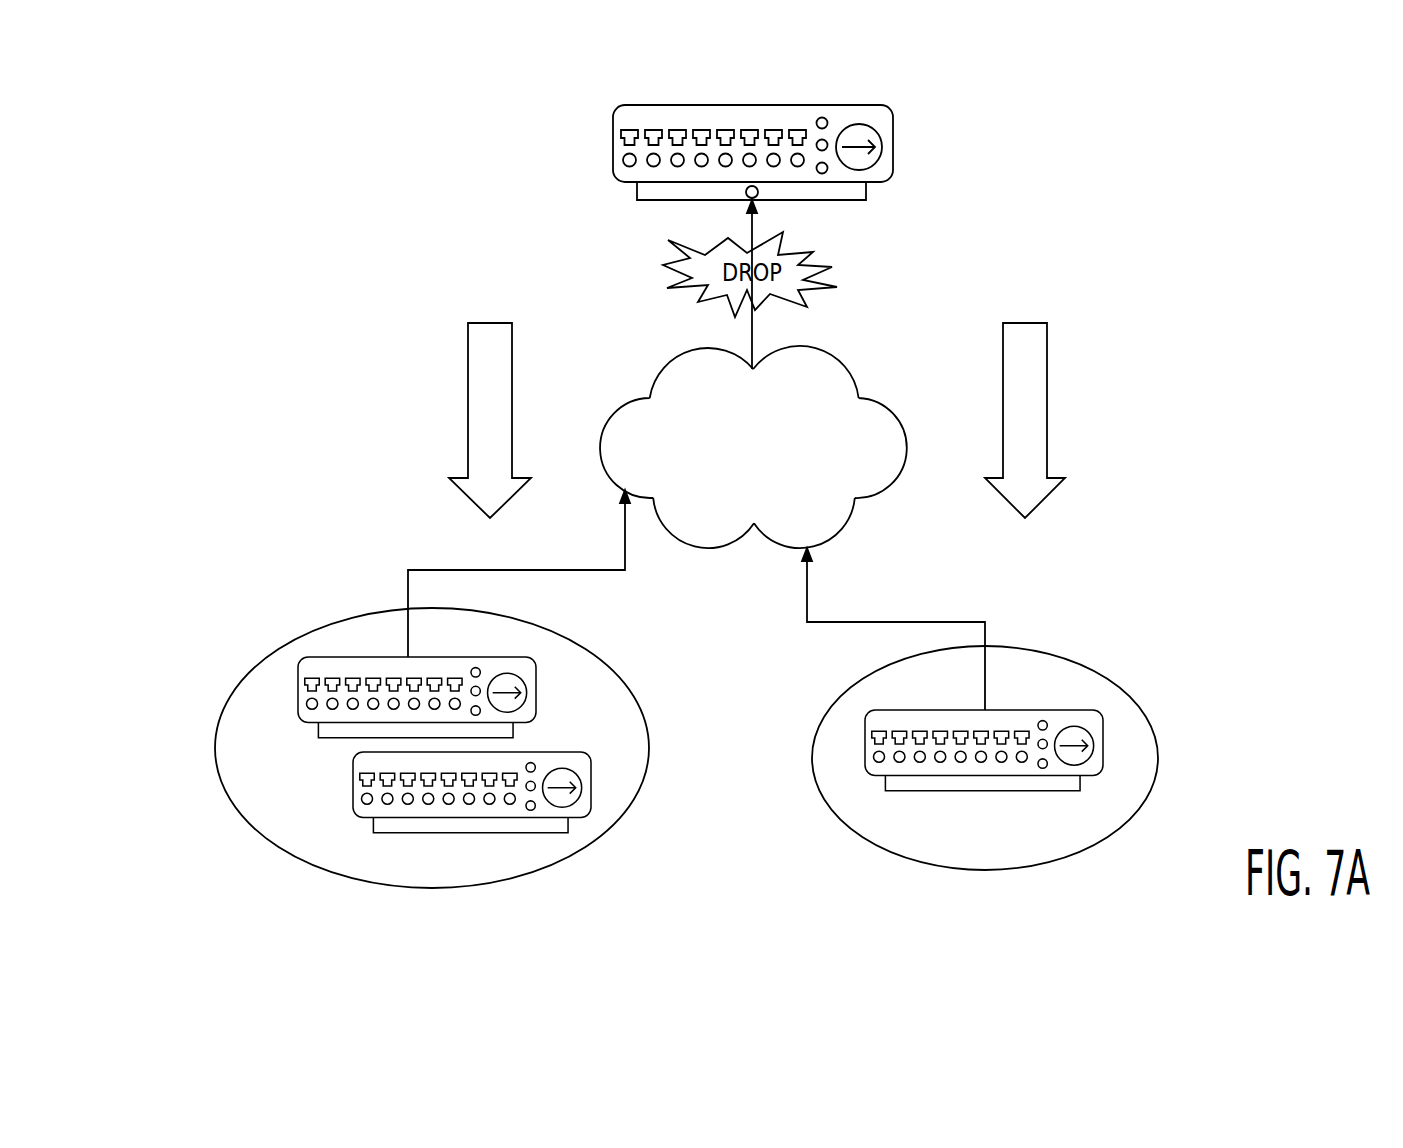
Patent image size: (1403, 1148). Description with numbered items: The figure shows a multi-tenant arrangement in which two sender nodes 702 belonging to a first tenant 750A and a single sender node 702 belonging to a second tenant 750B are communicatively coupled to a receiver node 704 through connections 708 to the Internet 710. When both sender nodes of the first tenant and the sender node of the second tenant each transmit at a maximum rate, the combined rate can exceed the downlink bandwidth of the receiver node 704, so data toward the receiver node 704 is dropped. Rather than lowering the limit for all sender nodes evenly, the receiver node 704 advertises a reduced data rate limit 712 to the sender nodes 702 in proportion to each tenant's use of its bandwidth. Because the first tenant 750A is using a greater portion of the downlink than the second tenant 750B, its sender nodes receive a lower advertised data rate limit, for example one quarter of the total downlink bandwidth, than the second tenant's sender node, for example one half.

The sender node 702 is at (352, 790).
The receiver node 704 is at (893, 131).
The connection 708 is at (753, 327).
The Internet 710 is at (892, 410).
The reduced data rate limit 712 is at (478, 377).
The first tenant 750A is at (318, 637).
The second tenant 750B is at (1057, 667).